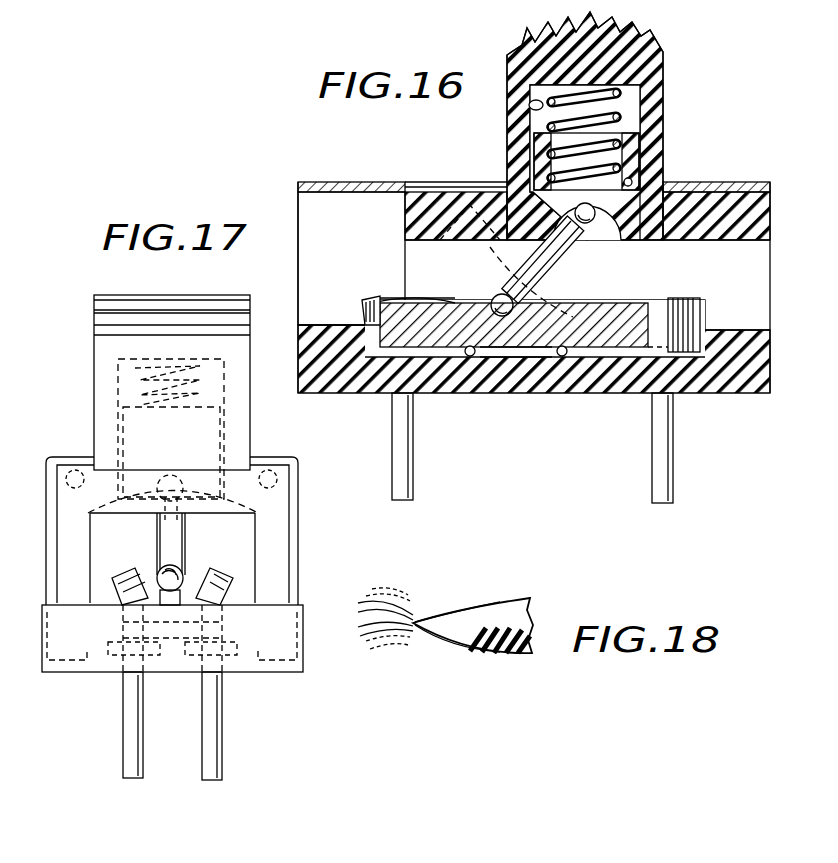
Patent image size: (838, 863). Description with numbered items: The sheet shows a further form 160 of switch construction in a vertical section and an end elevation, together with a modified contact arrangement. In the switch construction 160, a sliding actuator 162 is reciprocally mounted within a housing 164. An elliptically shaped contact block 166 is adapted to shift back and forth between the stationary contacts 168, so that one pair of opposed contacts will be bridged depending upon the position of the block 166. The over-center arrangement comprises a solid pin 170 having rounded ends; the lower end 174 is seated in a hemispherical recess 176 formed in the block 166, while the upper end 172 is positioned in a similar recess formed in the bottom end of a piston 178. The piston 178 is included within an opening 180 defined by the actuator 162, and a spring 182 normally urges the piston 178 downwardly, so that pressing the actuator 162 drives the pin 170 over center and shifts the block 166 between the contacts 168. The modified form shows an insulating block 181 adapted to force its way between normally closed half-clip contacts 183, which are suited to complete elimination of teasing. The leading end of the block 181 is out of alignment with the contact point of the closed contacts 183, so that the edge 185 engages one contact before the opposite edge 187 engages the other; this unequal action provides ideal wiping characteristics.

In FIG. 17, the switch construction 160 is at (222, 150).
In FIG. 16, the sliding actuator 162 is at (663, 70).
In FIG. 17, the sliding actuator 162 is at (100, 358).
In FIG. 16, the housing 164 is at (350, 182).
In FIG. 17, the housing 164 is at (298, 505).
In FIG. 16, the contact block 166 is at (362, 318).
In FIG. 16, the stationary contact 168 is at (386, 300).
In FIG. 17, the stationary contact 168 is at (118, 583).
In FIG. 16, the solid pin 170 is at (565, 250).
In FIG. 17, the solid pin 170 is at (178, 524).
In FIG. 16, the upper end 172 is at (608, 234).
In FIG. 16, the lower end 174 is at (494, 308).
In FIG. 16, the hemispherical recess 176 is at (568, 289).
In FIG. 16, the piston 178 is at (655, 180).
In FIG. 17, the piston 178 is at (128, 428).
In FIG. 16, the opening 180 is at (530, 108).
In FIG. 16, the spring 182 is at (600, 108).
In FIG. 17, the spring 182 is at (118, 380).
In FIG. 18, the insulating block 181 is at (490, 602).
In FIG. 18, the half-clip contacts 183 is at (416, 612).
In FIG. 18, the edge 185 is at (425, 636).
In FIG. 18, the opposite edge 187 is at (438, 610).